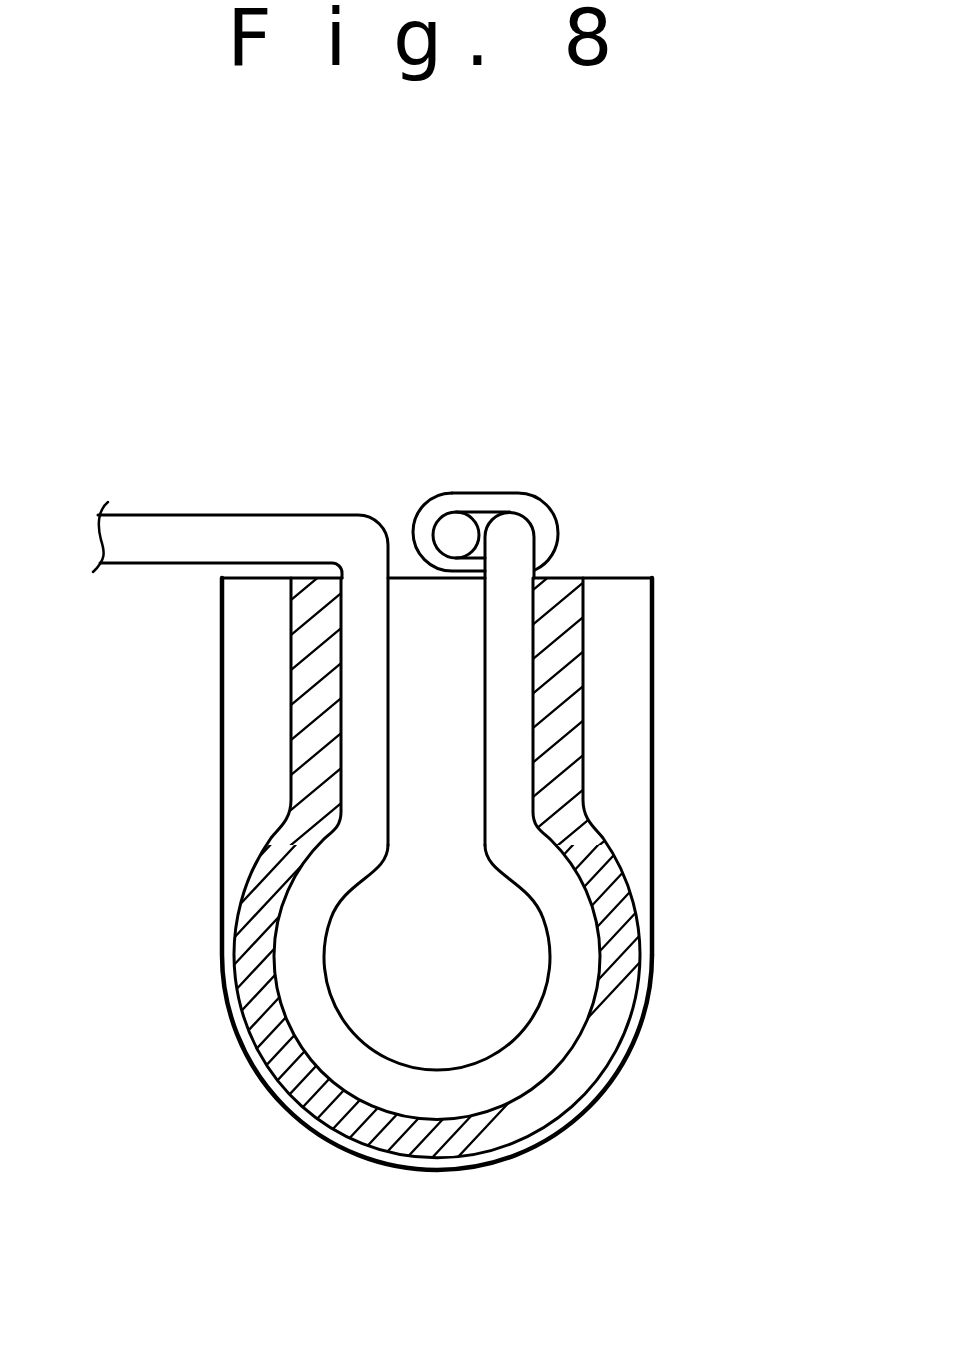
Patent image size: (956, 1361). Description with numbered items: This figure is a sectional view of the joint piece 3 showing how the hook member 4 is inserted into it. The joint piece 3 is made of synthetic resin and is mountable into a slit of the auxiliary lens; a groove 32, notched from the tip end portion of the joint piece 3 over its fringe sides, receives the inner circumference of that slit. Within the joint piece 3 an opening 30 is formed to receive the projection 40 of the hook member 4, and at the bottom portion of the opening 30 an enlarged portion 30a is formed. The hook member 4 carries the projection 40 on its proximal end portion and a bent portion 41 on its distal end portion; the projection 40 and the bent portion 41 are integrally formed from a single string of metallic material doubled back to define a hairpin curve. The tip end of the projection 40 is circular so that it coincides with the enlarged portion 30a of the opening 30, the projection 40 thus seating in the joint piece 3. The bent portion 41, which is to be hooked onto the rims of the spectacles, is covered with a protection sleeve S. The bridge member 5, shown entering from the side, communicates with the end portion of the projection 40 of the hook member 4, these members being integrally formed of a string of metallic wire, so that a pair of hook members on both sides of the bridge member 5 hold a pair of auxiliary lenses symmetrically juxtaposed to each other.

The joint piece 3 is at (653, 708).
The groove 32 is at (618, 772).
The opening 30 is at (434, 767).
The enlarged portion 30a is at (288, 1038).
The bridge member 5 is at (178, 533).
The projection 40 is at (550, 1024).
The hook member 4 is at (567, 542).
The protection sleeve S is at (464, 491).
The bent portion 41 is at (513, 535).